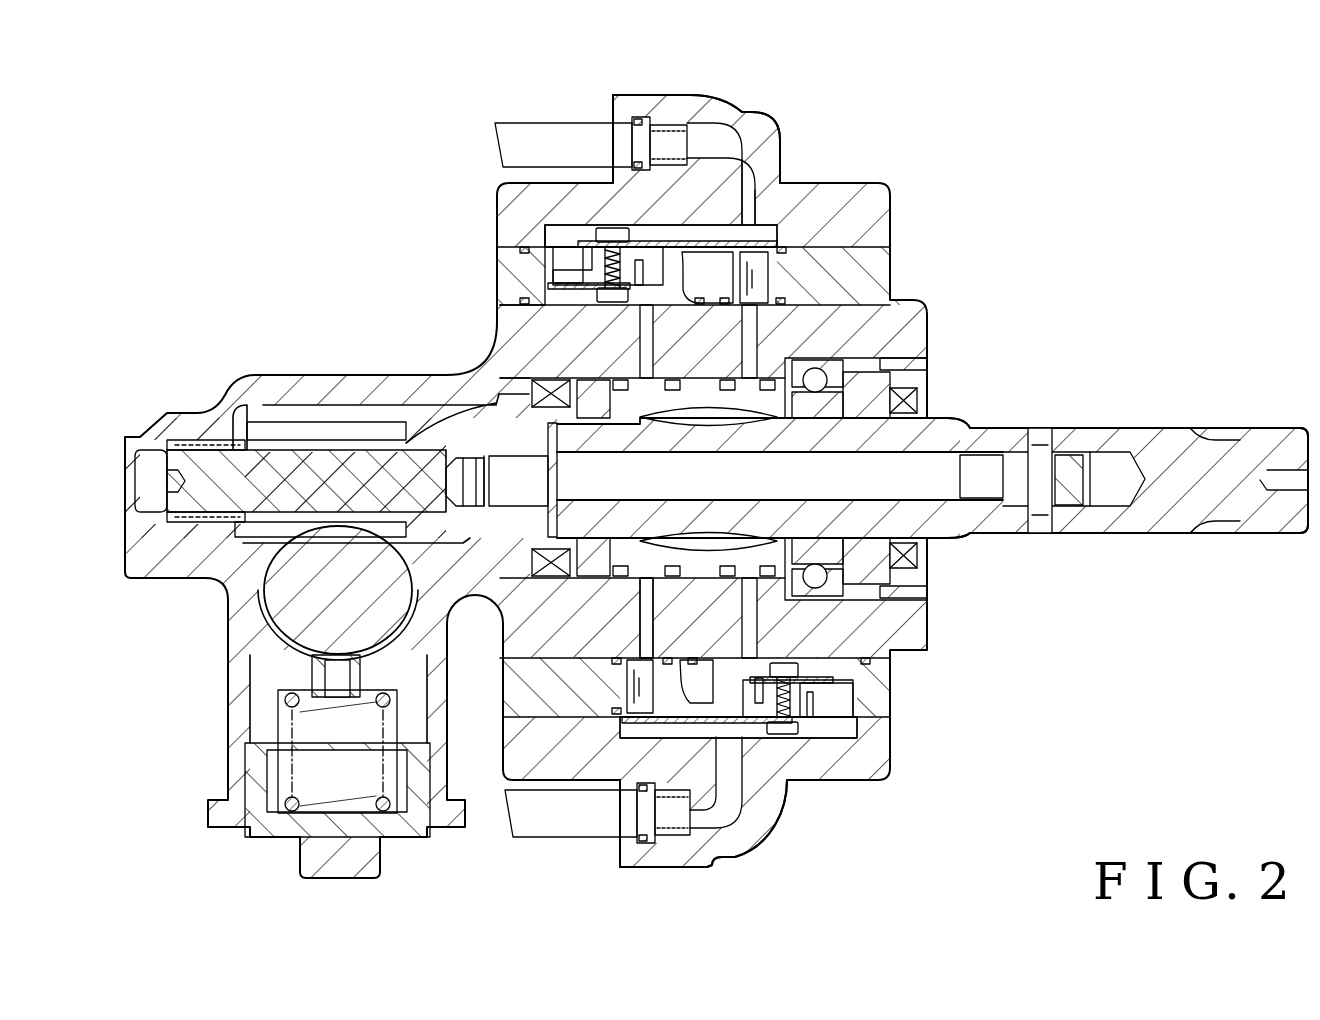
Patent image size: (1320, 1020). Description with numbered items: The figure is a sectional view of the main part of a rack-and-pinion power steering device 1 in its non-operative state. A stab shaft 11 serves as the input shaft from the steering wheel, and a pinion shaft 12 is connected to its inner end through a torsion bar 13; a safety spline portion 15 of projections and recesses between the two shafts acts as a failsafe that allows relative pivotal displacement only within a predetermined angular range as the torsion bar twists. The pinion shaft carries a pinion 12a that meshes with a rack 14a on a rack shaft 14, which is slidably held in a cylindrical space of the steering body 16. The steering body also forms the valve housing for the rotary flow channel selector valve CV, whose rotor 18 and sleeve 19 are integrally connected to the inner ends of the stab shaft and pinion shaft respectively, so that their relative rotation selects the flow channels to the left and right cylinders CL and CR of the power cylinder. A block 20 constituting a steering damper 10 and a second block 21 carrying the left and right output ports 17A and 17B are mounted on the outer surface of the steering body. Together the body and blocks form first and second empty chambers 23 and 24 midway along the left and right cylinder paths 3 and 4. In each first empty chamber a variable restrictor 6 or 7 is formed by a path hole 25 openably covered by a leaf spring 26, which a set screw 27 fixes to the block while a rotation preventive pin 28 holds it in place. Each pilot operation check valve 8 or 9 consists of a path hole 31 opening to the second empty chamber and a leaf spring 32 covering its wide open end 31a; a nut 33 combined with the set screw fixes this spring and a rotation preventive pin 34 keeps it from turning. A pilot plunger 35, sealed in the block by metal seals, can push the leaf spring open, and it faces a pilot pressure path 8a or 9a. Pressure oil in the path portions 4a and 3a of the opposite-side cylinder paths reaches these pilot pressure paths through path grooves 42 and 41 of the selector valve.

The power steering apparatus 1 is at (1069, 235).
The left cylinder path 3 is at (755, 152).
The path portion 3a is at (640, 362).
The right cylinder path 4 is at (746, 815).
The path portion 4a is at (742, 606).
The variable restrictor 6 is at (558, 300).
The variable restrictor 7 is at (842, 660).
The pilot operation check valve 8 is at (719, 218).
The pilot pressure path 8a is at (757, 336).
The pilot operation check valve 9 is at (722, 800).
The pilot pressure path 9a is at (645, 614).
The steering damper 10 is at (790, 226).
The stab shaft 11 is at (1170, 442).
The pinion shaft 12 is at (487, 423).
The pinion 12a is at (330, 430).
The torsion bar 13 is at (1030, 455).
The rack shaft 14 is at (300, 621).
The rack 14a is at (222, 588).
The safety spline portion 15 is at (582, 436).
The steering body 16 is at (912, 342).
The left output port 17A is at (672, 135).
The right output port 17B is at (668, 830).
The rotor 18 is at (793, 432).
The sleeve 19 is at (695, 408).
The block 20 is at (885, 264).
The second block 21 is at (880, 210).
The first empty chamber 23 is at (545, 290).
The second empty chamber 24 is at (553, 236).
The path hole 25 is at (565, 270).
The leaf spring 26 is at (575, 292).
The set screw 27 is at (612, 302).
The rotation preventive pin 28 is at (639, 260).
The path hole 31 is at (676, 292).
The wide open end 31a is at (692, 252).
The leaf spring 32 is at (688, 240).
The nut 33 is at (612, 230).
The rotation preventive pin 34 is at (587, 245).
The pilot plunger 35 is at (771, 274).
The path groove 41 is at (640, 410).
The path groove 42 is at (748, 560).
The left cylinder CL is at (528, 147).
The right cylinder CR is at (528, 815).
The rotary flow channel selector valve CV is at (848, 345).